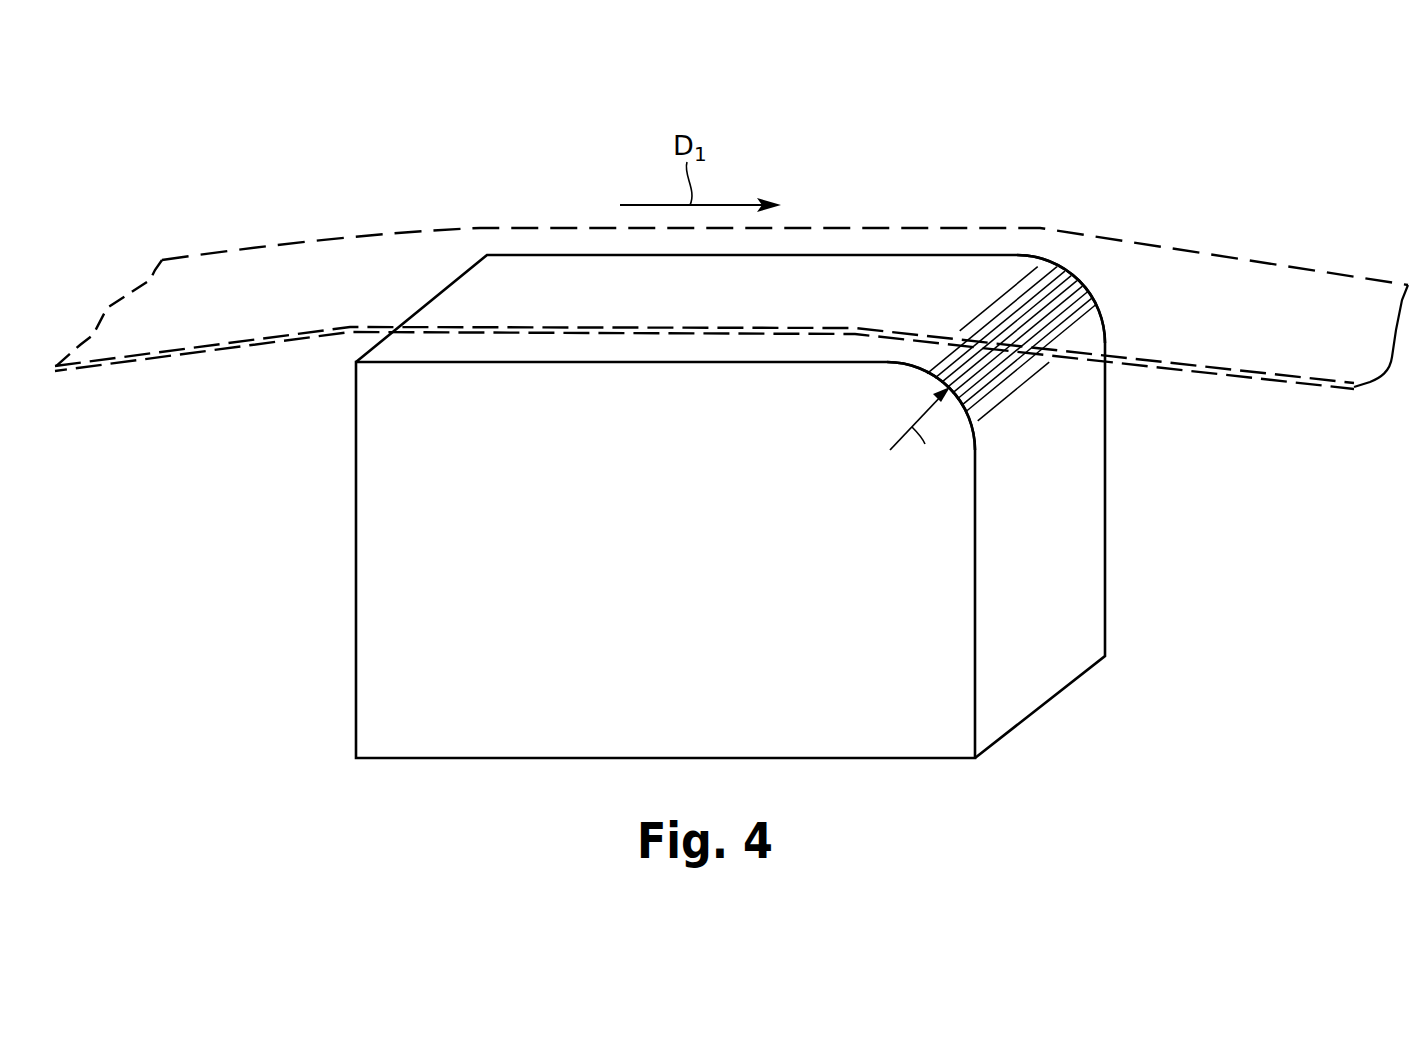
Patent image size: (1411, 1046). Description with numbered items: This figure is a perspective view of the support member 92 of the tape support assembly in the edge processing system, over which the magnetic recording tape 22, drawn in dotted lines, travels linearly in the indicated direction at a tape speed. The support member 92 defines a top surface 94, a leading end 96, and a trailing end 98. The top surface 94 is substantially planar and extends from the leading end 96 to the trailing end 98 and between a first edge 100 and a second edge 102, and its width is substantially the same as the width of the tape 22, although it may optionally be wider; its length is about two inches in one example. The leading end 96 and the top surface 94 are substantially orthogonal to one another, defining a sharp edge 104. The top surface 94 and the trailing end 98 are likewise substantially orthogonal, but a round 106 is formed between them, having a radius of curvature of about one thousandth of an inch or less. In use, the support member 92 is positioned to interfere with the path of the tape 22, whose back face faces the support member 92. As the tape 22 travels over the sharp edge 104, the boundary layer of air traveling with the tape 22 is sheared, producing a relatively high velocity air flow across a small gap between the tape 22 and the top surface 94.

The magnetic recording tape 22 is at (255, 280).
The support member 92 is at (270, 430).
The top surface 94 is at (941, 290).
The leading end 96 is at (356, 525).
The trailing end 98 is at (1053, 508).
The first edge 100 is at (897, 255).
The second edge 102 is at (693, 366).
The sharp edge 104 is at (435, 298).
The round 106 is at (1090, 320).